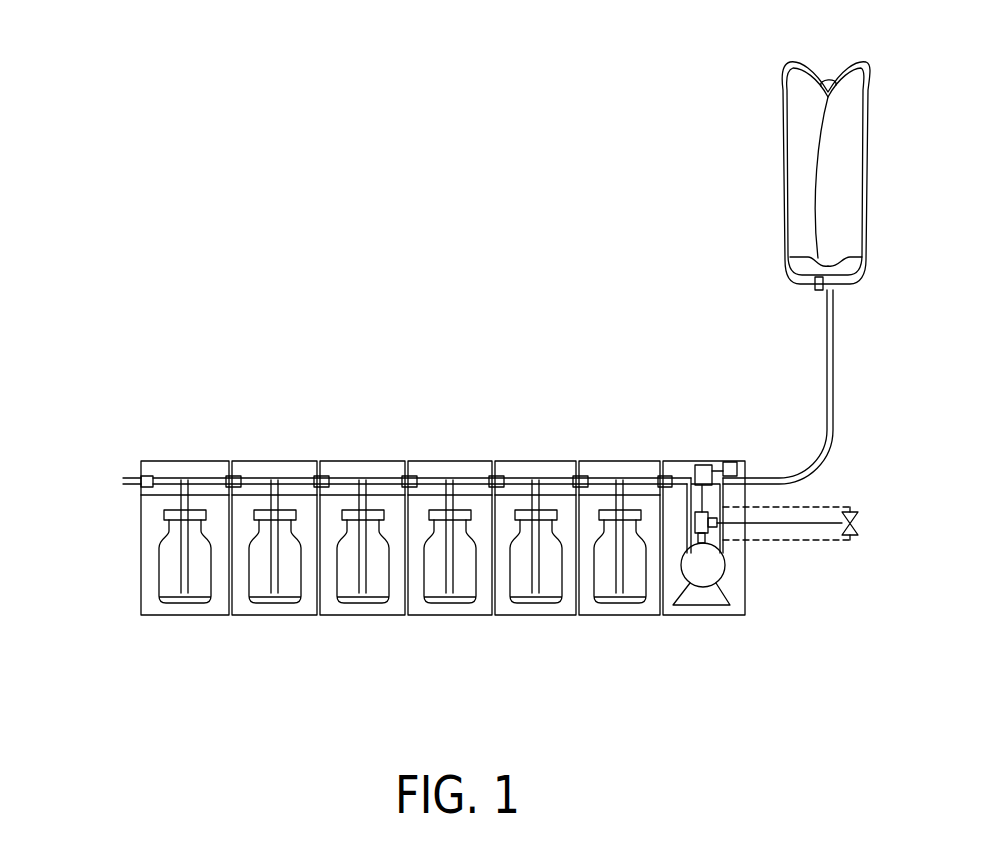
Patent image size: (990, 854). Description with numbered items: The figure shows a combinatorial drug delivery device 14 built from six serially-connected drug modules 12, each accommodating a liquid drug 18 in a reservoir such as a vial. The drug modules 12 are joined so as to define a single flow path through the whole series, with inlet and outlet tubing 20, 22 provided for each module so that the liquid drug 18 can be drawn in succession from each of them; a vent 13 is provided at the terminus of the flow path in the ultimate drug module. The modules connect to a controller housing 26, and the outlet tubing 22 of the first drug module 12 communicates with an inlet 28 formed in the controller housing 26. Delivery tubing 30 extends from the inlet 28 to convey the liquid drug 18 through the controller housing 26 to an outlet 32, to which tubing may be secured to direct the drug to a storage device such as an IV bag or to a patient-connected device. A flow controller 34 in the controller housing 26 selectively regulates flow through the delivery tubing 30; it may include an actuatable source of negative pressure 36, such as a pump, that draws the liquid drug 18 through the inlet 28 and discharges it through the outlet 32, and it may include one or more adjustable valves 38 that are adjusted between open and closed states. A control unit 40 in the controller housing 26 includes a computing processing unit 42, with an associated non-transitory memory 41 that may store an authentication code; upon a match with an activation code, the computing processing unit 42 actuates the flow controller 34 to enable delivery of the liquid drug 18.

The drug module 12 is at (399, 597).
The vent 13 is at (140, 478).
The combinatorial drug delivery device 14 is at (505, 460).
The liquid drug 18 is at (170, 572).
The inlet tubing 20 is at (246, 480).
The outlet tubing 22 is at (197, 480).
The controller housing 26 is at (714, 618).
The inlet 28 is at (665, 480).
The delivery tubing 30 is at (685, 480).
The outlet 32 is at (752, 479).
The flow controller 34 is at (826, 556).
The source of negative pressure 36 is at (722, 560).
The adjustable valve 38 is at (853, 523).
The control unit 40 is at (757, 507).
The non-transitory memory 41 is at (734, 463).
The computing processing unit 42 is at (703, 466).